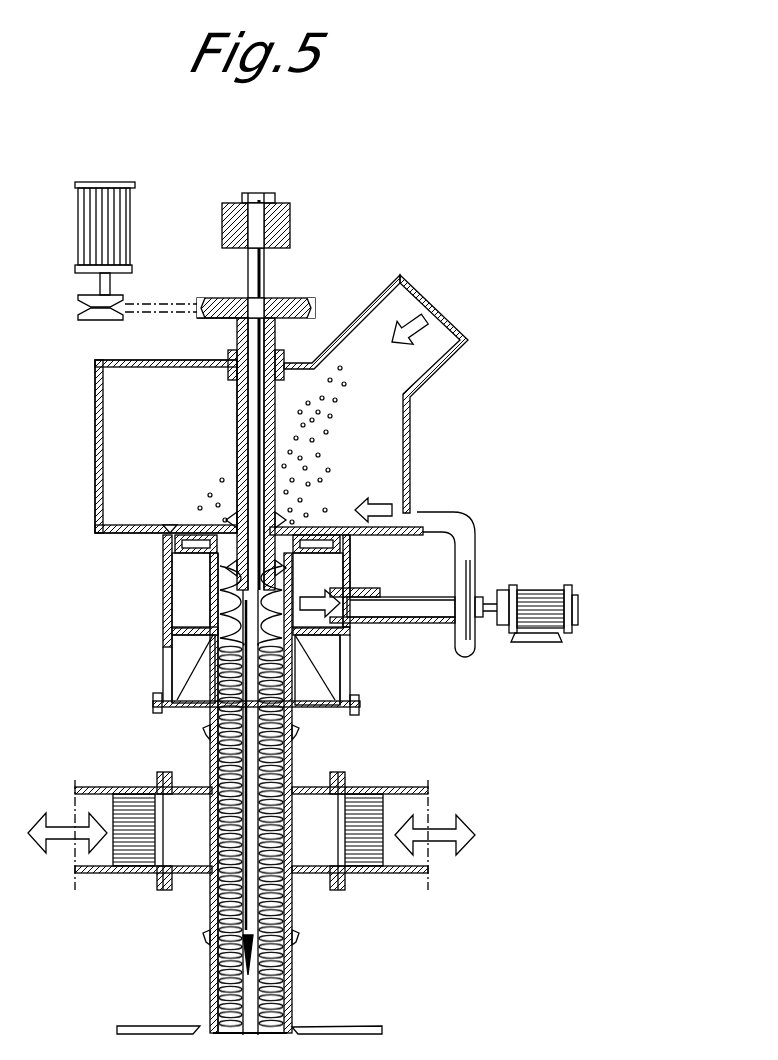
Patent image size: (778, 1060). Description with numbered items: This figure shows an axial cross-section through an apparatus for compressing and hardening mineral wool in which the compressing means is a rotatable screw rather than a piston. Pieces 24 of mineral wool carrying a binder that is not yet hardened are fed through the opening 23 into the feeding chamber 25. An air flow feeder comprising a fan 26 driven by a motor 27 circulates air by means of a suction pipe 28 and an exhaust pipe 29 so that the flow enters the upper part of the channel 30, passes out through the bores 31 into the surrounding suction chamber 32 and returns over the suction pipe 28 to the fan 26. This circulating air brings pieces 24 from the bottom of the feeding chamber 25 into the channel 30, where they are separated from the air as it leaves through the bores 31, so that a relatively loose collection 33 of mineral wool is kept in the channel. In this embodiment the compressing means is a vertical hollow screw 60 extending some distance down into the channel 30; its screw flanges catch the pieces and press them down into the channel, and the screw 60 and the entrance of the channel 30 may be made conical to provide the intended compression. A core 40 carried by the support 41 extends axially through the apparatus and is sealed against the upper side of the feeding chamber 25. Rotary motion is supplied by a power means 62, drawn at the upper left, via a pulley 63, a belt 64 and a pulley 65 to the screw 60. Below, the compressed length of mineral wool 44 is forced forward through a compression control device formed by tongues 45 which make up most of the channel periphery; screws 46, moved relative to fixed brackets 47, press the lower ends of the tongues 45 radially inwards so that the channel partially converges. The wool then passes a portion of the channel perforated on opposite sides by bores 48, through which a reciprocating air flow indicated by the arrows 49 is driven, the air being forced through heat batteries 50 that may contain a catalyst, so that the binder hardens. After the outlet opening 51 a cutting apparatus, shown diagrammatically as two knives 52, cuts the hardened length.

The opening 23 is at (448, 340).
The pieces of mineral wool 24 is at (352, 456).
The feeding chamber 25 is at (165, 444).
The fan 26 is at (470, 578).
The motor 27 is at (540, 590).
The suction pipe 28 is at (410, 617).
The exhaust pipe 29 is at (462, 528).
The channel 30 is at (178, 545).
The bores 31 is at (215, 616).
The suction chamber 32 is at (206, 586).
The loose collection of mineral wool 33 is at (215, 616).
The core 40 is at (262, 314).
The support 41 is at (280, 226).
The length of mineral wool 44 is at (270, 775).
The tongues 45 is at (215, 712).
The screws 46 is at (155, 708).
The brackets 47 is at (343, 675).
The bores 48 is at (215, 846).
The arrows 49 is at (60, 820).
The heat batteries 50 is at (135, 855).
The outlet opening 51 is at (288, 940).
The knives 52 is at (172, 1027).
The vertical hollow screw 60 is at (237, 430).
The auxiliary motor 62 is at (80, 222).
The pulley 63 is at (92, 318).
The belt 64 is at (198, 304).
The pulley 65 is at (215, 318).